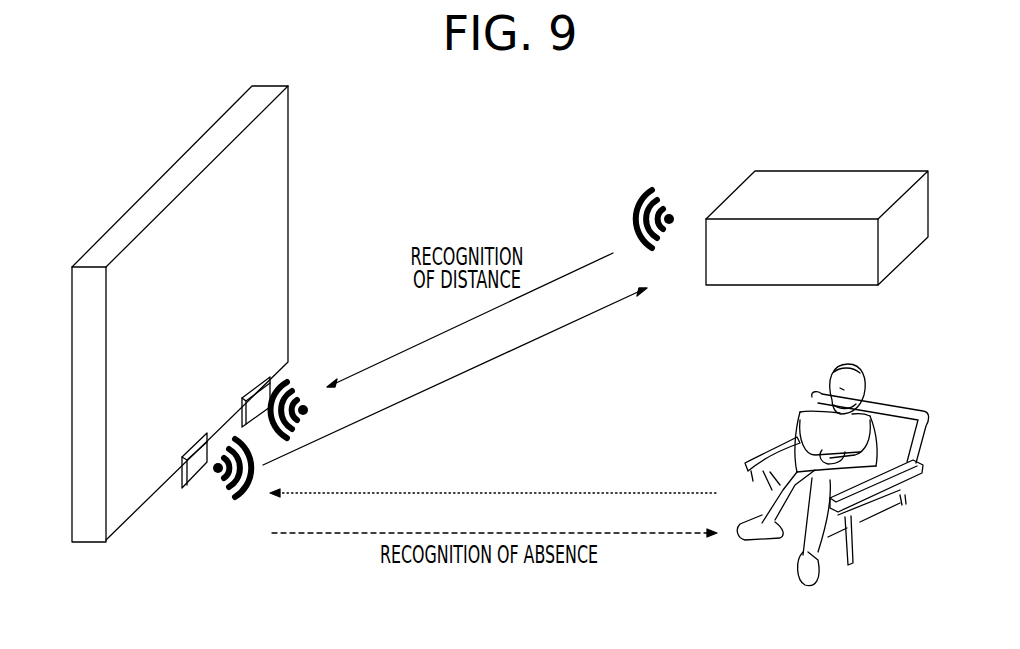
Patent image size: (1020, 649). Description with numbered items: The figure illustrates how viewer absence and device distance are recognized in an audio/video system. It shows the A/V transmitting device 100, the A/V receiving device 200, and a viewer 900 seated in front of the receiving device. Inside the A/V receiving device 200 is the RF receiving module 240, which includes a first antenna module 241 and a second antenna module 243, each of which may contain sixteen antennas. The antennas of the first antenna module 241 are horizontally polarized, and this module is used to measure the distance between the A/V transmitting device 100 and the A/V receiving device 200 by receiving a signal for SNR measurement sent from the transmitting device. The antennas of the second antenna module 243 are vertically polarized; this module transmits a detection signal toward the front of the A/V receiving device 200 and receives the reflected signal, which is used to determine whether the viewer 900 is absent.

The A/V transmitting device 100 is at (819, 181).
The A/V receiving device 200 is at (153, 195).
The RF receiving module 240 is at (242, 332).
The first antenna module 241 is at (246, 393).
The second antenna module 243 is at (188, 452).
The viewer 900 is at (849, 360).